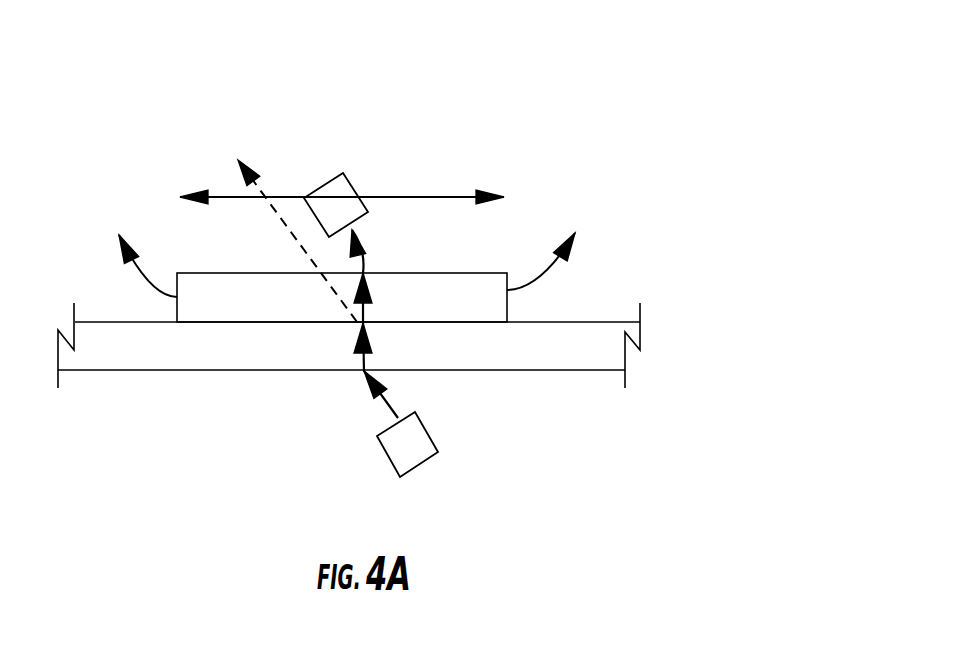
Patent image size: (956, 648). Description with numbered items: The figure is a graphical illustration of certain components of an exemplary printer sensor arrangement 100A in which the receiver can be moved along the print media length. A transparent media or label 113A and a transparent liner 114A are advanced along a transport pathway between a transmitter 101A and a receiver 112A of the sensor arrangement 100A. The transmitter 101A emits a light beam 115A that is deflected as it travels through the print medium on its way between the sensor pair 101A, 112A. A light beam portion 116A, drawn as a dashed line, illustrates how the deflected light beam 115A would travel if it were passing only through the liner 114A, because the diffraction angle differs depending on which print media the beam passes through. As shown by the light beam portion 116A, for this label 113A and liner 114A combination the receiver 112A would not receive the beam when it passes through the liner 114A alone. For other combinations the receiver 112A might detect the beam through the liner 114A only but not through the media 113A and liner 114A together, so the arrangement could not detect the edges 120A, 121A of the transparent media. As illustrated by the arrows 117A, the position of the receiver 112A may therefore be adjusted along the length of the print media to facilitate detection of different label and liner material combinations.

The sensor arrangement 100A is at (532, 72).
The transmitter 101A is at (423, 467).
The receiver 112A is at (317, 192).
The transparent media/label 113A is at (495, 314).
The transparent liner 114A is at (610, 364).
The light beam 115A is at (383, 408).
The light beam portion 116A is at (272, 207).
The arrows 117A is at (228, 197).
The edge of transparent media 120A is at (136, 247).
The edge of transparent media 121A is at (552, 244).